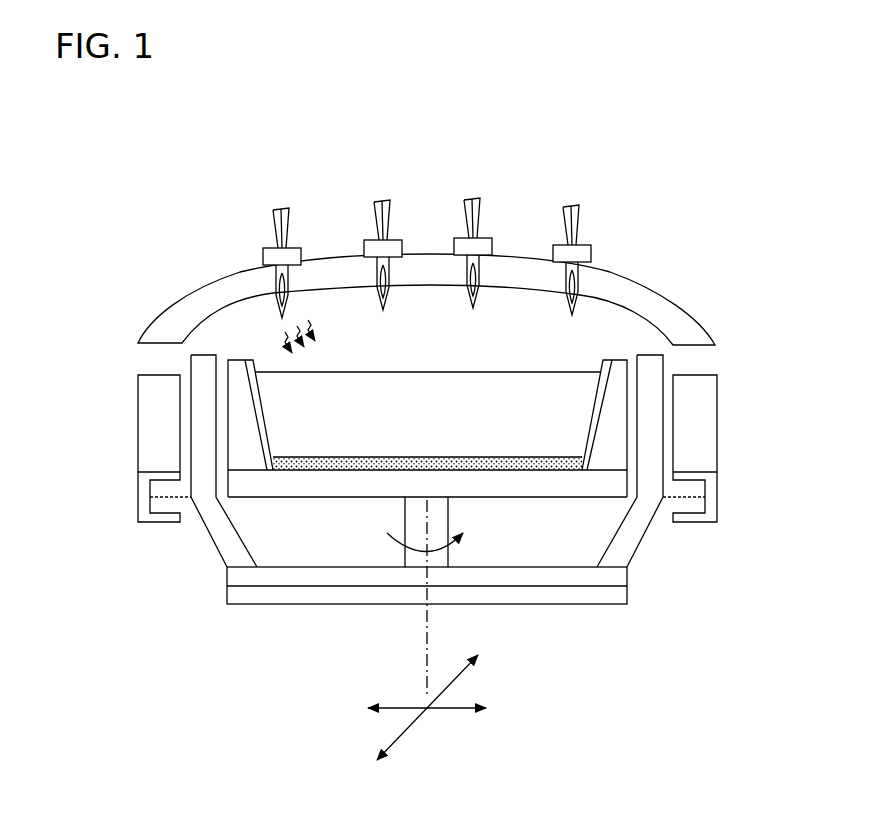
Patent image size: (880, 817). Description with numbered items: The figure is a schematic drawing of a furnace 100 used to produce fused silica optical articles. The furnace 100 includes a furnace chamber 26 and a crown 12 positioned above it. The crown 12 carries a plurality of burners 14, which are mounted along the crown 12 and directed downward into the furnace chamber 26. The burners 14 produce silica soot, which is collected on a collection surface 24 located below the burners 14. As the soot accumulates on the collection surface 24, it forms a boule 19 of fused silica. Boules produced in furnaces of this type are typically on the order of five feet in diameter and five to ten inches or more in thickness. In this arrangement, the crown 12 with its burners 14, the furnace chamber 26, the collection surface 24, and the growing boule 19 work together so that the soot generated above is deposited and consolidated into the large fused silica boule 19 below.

The furnace 100 is at (176, 588).
The crown 12 is at (683, 297).
The burners 14 is at (263, 262).
The boule 19 is at (554, 399).
The collection surface 24 is at (545, 455).
The furnace chamber 26 is at (415, 311).